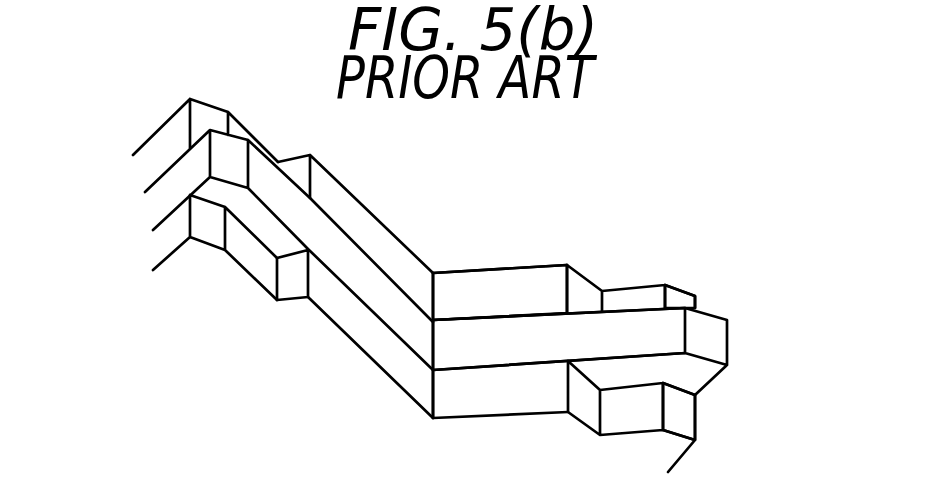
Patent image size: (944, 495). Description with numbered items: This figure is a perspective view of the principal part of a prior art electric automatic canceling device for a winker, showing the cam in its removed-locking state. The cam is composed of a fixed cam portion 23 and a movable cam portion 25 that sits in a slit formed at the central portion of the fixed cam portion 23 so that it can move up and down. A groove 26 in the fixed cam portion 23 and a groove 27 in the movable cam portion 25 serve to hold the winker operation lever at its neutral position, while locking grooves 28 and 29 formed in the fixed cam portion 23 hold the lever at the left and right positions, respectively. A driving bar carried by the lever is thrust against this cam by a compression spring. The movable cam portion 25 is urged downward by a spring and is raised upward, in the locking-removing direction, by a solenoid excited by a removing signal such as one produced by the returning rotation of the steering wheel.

The fixed cam portion 23 is at (693, 293).
The movable cam portion 25 is at (717, 335).
The groove 26 is at (435, 282).
The groove 27 is at (435, 340).
The locking groove 28 is at (283, 160).
The locking groove 29 is at (607, 300).